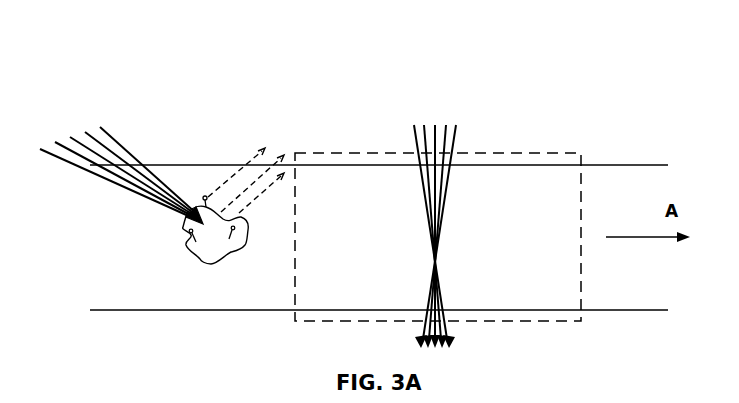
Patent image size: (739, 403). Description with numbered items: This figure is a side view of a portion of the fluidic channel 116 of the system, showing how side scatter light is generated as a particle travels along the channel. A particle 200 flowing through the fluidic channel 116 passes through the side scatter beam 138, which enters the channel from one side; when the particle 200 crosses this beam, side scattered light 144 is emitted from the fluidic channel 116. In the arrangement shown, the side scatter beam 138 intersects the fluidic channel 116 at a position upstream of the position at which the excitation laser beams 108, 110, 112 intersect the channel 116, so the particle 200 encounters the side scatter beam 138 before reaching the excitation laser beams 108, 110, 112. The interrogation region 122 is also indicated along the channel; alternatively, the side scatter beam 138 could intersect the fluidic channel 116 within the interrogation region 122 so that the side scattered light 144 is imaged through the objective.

The excitation laser beam 108 is at (453, 185).
The excitation laser beam 110 is at (453, 185).
The excitation laser beam 112 is at (434, 96).
The fluidic channel 116 is at (625, 162).
The interrogation region 122 is at (578, 150).
The side scatter beam 138 is at (110, 110).
The side scattered light 144 is at (247, 130).
The particle 200 is at (220, 260).